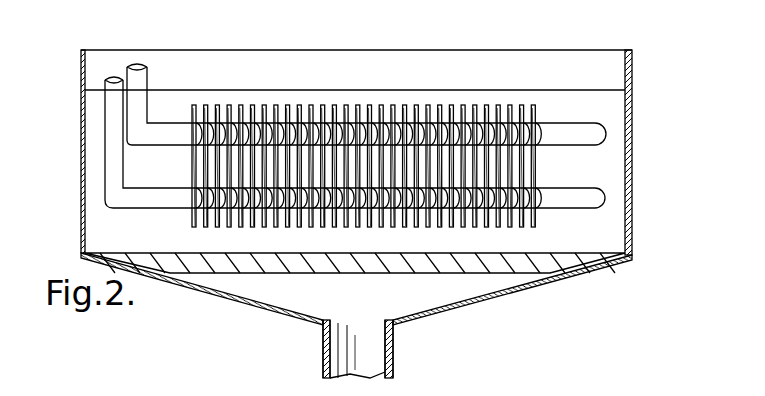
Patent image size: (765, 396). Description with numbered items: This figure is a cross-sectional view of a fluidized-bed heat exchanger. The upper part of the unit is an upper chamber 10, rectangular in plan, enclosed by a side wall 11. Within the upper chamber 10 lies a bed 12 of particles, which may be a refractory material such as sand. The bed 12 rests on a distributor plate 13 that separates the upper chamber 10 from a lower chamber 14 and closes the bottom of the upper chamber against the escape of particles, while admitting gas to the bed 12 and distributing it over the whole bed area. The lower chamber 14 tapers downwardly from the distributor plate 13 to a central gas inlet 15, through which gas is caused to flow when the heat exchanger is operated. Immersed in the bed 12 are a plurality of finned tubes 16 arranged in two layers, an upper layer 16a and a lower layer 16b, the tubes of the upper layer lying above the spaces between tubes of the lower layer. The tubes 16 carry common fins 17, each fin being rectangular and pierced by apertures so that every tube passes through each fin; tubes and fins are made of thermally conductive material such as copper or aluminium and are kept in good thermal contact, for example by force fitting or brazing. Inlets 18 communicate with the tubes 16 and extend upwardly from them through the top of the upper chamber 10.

The upper chamber 10 is at (600, 62).
The side wall 11 is at (633, 112).
The bed of particles 12 is at (587, 152).
The distributor plate 13 is at (513, 262).
The lower chamber 14 is at (433, 288).
The central gas inlet 15 is at (382, 355).
The finned tubes 16 is at (572, 180).
The upper layer of tubes 16a is at (585, 130).
The lower layer of tubes 16b is at (587, 200).
The fins 17 is at (520, 108).
The inlets 18 is at (135, 70).